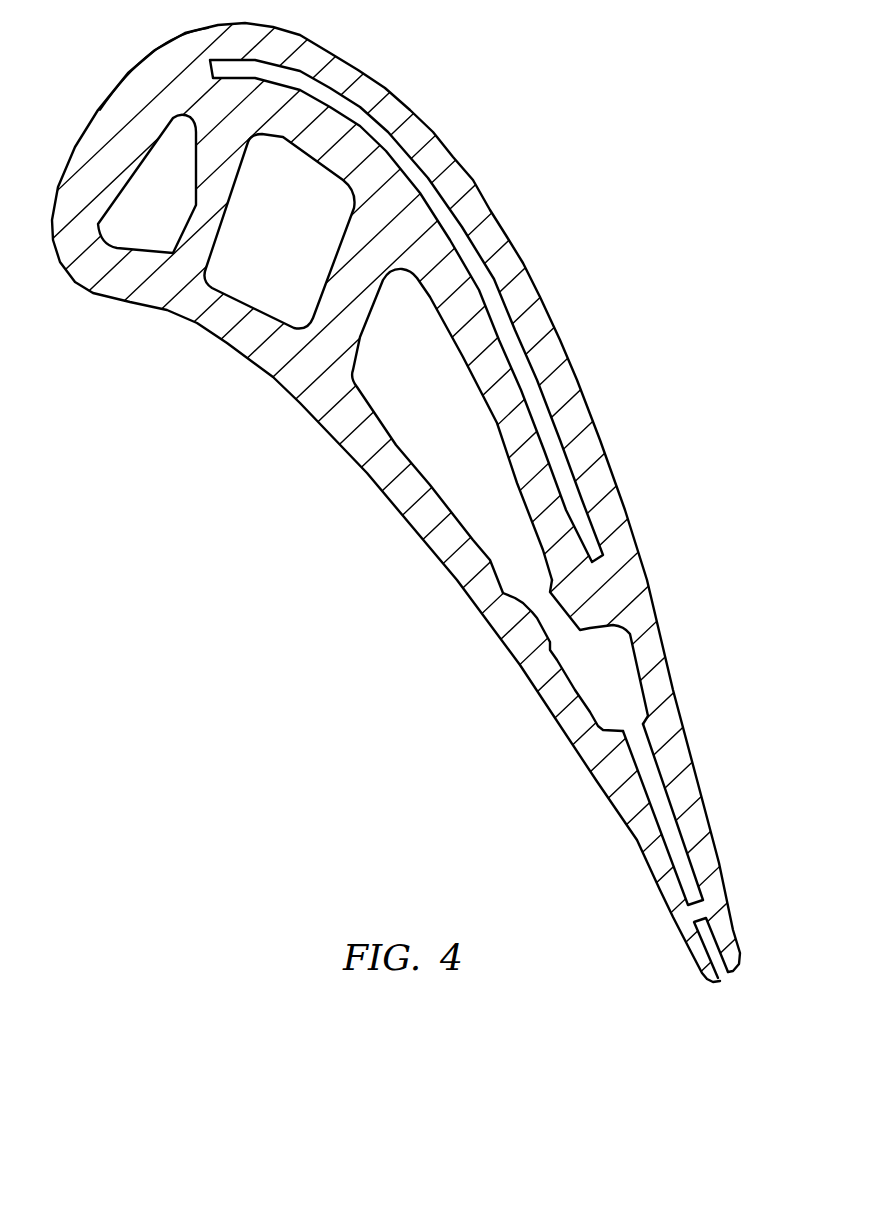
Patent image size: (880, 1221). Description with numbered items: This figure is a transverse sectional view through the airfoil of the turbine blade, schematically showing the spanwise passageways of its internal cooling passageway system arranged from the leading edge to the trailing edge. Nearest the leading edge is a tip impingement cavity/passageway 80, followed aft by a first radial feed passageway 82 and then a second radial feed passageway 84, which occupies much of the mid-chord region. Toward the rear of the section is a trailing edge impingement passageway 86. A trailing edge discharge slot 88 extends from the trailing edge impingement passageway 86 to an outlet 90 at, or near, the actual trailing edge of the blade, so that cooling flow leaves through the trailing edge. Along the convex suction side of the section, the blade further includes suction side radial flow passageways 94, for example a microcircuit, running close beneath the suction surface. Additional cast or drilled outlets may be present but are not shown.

The tip impingement cavity/passageway 80 is at (135, 228).
The first radial feed passageway 82 is at (260, 268).
The second radial feed passageway 84 is at (411, 406).
The trailing edge impingement passageway 86 is at (590, 714).
The trailing edge discharge slot 88 is at (690, 855).
The outlet 90 is at (727, 992).
The suction side radial flow passageways 94 is at (566, 431).